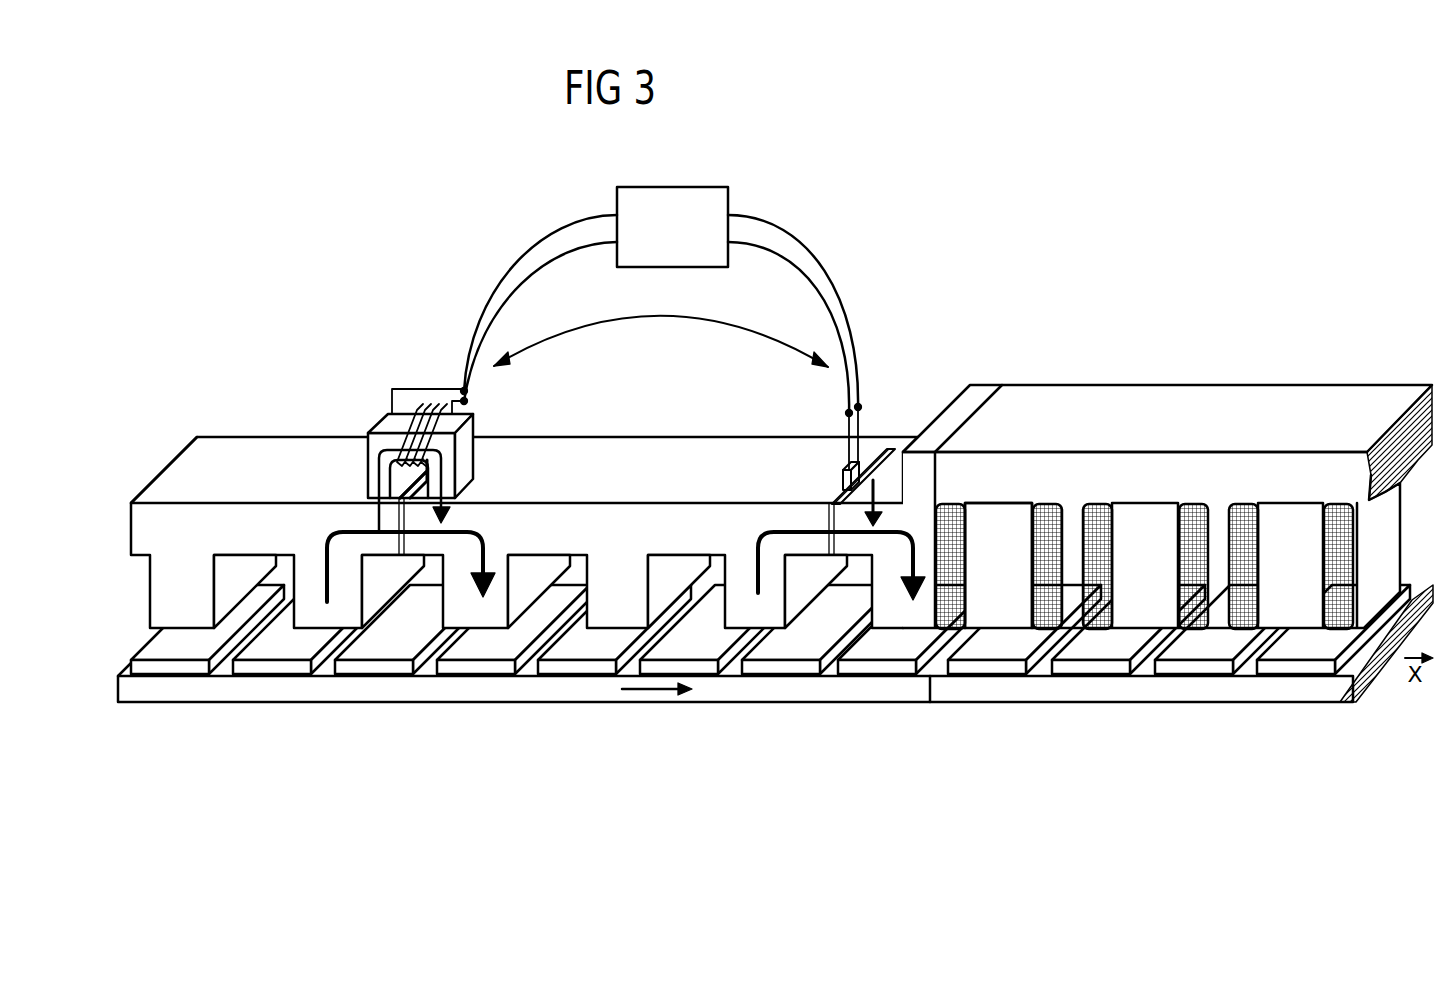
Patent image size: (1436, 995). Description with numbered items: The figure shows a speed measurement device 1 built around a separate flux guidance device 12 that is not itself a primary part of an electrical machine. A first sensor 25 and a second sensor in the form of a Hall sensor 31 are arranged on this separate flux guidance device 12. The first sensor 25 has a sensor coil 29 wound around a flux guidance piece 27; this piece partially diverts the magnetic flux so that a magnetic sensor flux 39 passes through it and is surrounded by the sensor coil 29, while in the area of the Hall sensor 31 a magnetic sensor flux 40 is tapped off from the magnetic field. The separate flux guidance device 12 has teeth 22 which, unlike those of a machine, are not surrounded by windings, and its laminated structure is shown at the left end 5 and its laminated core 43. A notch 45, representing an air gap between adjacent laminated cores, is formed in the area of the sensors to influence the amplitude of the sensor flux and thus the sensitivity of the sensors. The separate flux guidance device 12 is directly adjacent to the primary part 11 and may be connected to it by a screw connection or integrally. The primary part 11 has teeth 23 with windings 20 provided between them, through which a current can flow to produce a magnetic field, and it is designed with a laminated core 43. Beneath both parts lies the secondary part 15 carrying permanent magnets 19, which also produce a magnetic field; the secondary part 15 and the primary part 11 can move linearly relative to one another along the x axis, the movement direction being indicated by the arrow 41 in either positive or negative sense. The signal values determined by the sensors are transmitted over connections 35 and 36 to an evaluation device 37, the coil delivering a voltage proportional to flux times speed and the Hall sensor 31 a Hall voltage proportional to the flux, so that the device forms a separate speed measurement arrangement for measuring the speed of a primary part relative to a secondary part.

The speed measurement device 1 is at (675, 329).
The primary part 5 is at (507, 517).
The primary part 11 is at (1103, 405).
The separate flux guidance device 12 is at (265, 452).
The secondary part 15 is at (1373, 672).
The permanent magnets 19 is at (1294, 668).
The winding 20 is at (947, 527).
The teeth 22 is at (165, 594).
The teeth 23 is at (997, 567).
The first sensor 25 is at (419, 424).
The flux guidance piece 27 is at (372, 448).
The sensor coil 29 is at (420, 442).
The Hall sensor 31 is at (836, 461).
The connection 35 is at (452, 383).
The connection 36 is at (871, 396).
The evaluation device 37 is at (730, 200).
The magnetic sensor flux 39 is at (378, 512).
The magnetic sensor flux 40 is at (808, 490).
The arrow 41 is at (650, 698).
The laminated core 43 is at (176, 475).
The notch 45 is at (422, 483).